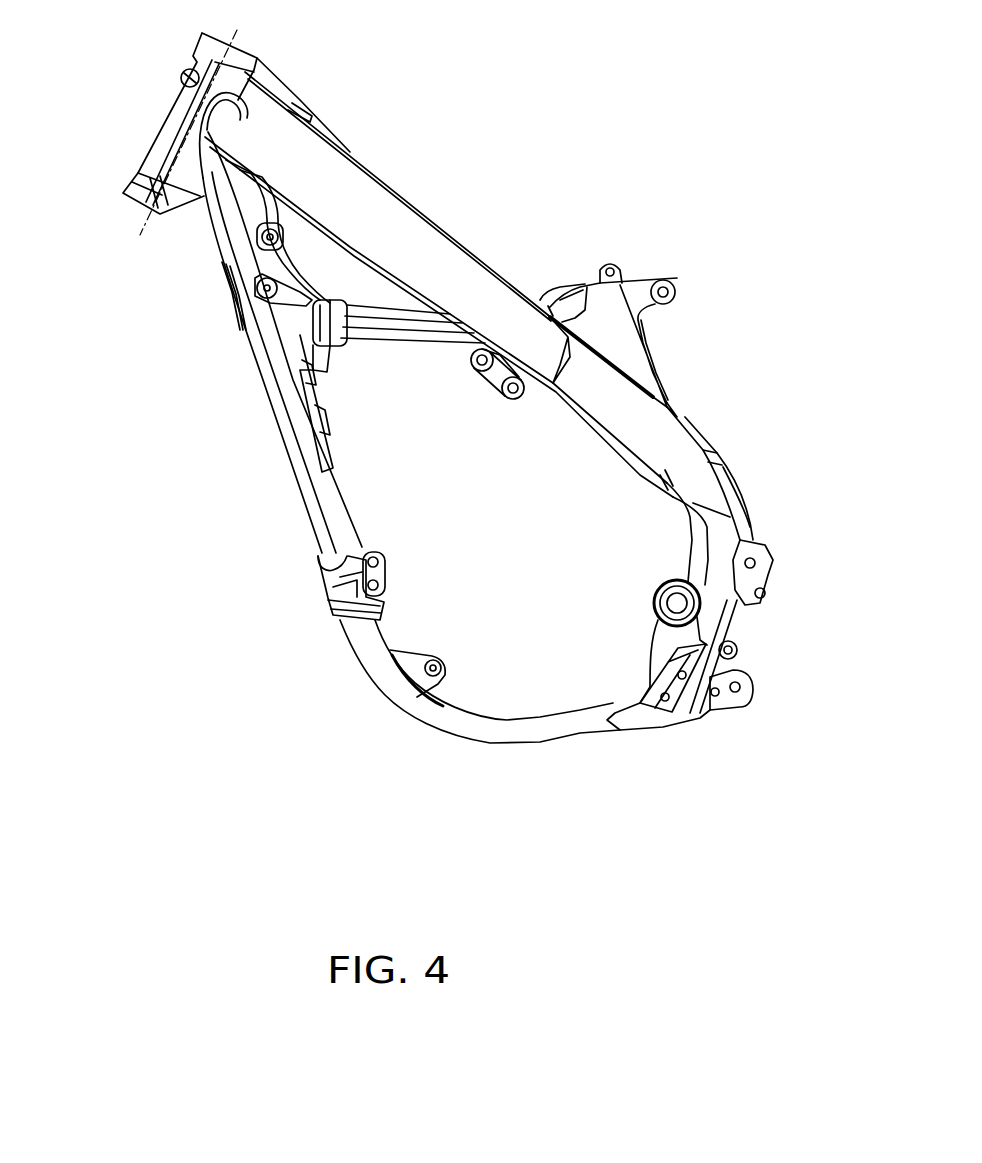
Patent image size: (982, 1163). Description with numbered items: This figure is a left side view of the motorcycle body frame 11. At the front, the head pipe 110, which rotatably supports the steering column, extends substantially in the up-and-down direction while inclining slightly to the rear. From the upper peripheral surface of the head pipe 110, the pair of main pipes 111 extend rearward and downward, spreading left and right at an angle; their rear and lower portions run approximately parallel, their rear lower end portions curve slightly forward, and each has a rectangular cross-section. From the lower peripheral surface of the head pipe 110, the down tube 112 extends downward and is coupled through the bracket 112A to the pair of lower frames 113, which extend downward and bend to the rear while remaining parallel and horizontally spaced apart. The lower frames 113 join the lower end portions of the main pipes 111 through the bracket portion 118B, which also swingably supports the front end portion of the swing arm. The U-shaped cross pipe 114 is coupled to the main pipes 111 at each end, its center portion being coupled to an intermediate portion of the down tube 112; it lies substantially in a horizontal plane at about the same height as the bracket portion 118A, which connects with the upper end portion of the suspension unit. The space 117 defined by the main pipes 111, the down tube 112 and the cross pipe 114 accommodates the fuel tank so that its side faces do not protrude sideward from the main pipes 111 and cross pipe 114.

The body frame 11 is at (577, 177).
The head pipe 110 is at (167, 110).
The main pipes 111 is at (380, 193).
The down tube 112 is at (327, 522).
The bracket 112A is at (330, 584).
The lower frames 113 is at (408, 698).
The cross pipe 114 is at (397, 340).
The space 117 is at (336, 272).
The bracket portion 118A is at (680, 278).
The bracket portion 118B is at (752, 684).